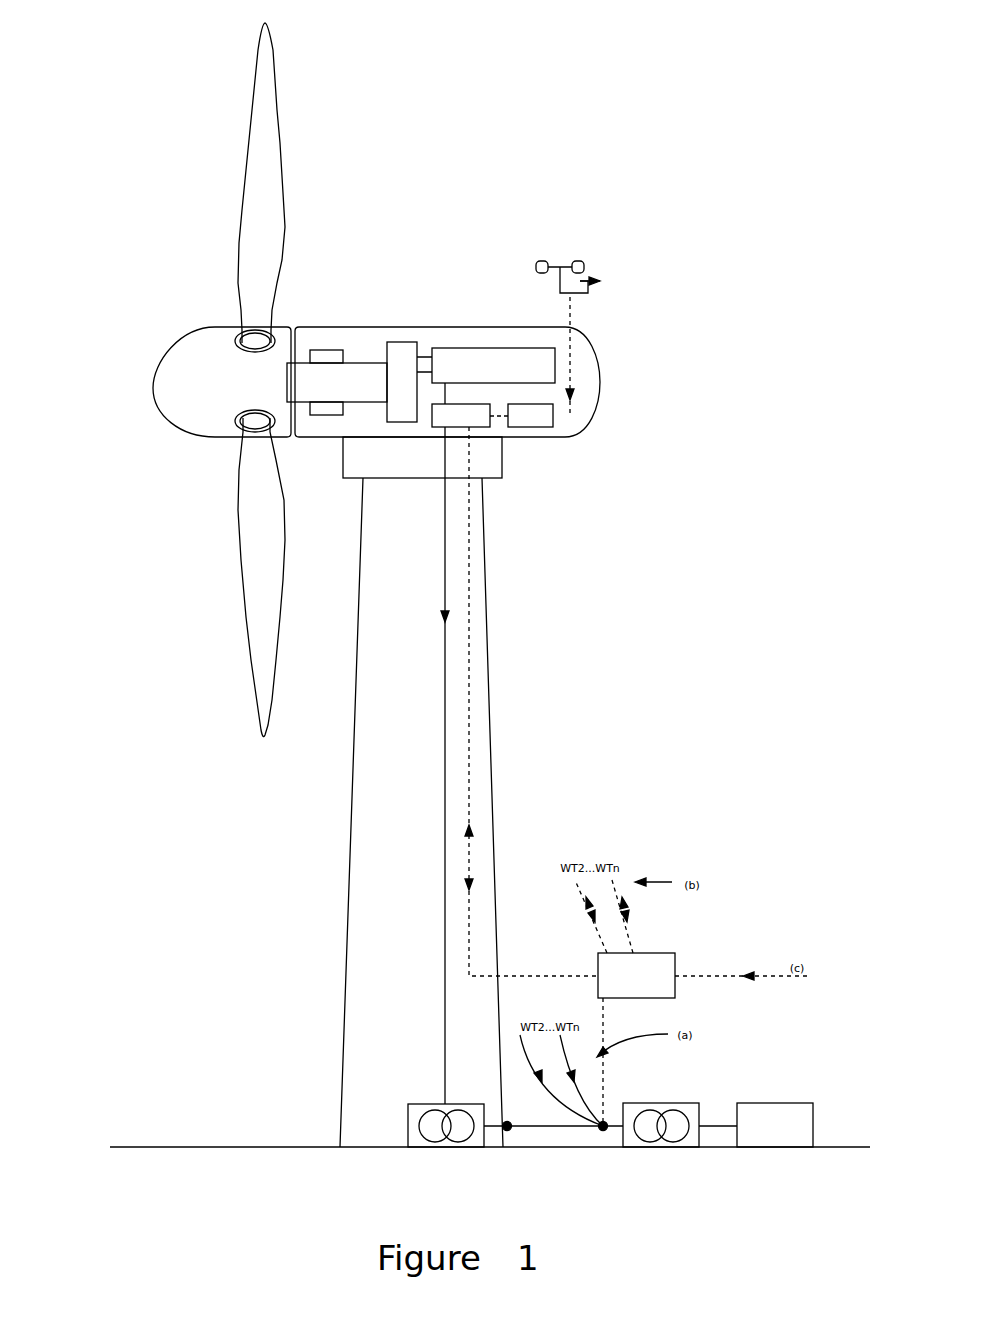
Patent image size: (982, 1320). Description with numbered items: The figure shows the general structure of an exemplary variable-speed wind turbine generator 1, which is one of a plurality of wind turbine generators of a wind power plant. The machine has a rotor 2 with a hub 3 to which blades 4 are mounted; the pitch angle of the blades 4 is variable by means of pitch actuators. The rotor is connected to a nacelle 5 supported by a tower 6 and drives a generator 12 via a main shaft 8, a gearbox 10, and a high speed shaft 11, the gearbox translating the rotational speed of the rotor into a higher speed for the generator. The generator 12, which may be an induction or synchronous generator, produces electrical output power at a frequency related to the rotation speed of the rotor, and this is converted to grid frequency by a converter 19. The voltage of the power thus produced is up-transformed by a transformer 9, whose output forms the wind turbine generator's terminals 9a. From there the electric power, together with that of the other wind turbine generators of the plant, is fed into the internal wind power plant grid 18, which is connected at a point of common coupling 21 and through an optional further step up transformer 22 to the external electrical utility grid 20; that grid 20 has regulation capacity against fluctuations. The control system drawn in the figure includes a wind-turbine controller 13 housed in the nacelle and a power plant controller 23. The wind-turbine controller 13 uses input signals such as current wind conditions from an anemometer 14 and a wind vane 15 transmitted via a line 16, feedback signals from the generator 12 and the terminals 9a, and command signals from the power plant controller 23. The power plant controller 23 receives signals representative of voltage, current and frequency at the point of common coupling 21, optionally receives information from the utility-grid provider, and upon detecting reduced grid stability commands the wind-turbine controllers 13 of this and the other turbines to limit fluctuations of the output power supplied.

The wind turbine generator 1 is at (434, 162).
The rotor 2 is at (151, 211).
The hub 3 is at (155, 390).
The blade 4 is at (278, 137).
The nacelle 5 is at (327, 327).
The tower 6 is at (347, 905).
The main shaft 8 is at (366, 349).
The transformer 9 is at (420, 1108).
The terminals 9a is at (507, 1131).
The gearbox 10 is at (393, 342).
The high speed shaft 11 is at (426, 357).
The generator 12 is at (490, 348).
The wind-turbine controller 13 is at (580, 432).
The anemometer 14 is at (577, 258).
The wind vane 15 is at (605, 269).
The line 16 is at (573, 353).
The wind power plant grid 18 is at (563, 1130).
The converter 19 is at (440, 428).
The electrical grid 20 is at (790, 1150).
The point of common coupling 21 is at (605, 1132).
The step up transformer 22 is at (690, 1140).
The power plant controller 23 is at (665, 953).